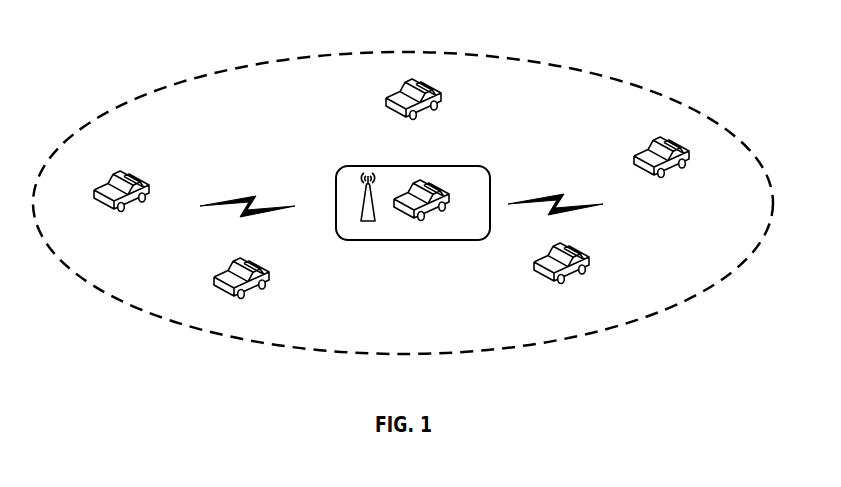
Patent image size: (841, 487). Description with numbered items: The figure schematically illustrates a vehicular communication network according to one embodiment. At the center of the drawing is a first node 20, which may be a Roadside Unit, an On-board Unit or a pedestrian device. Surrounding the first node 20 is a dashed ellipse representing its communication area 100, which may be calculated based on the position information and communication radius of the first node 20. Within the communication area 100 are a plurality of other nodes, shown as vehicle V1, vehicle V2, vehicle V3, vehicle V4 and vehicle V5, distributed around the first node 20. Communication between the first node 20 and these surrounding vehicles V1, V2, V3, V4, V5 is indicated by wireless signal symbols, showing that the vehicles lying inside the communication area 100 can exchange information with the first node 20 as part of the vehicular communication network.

The communication area 100 is at (430, 51).
The first node 20 is at (482, 166).
The vehicle V1 is at (140, 178).
The vehicle V2 is at (430, 85).
The vehicle V3 is at (651, 140).
The vehicle V4 is at (578, 250).
The vehicle V5 is at (258, 265).